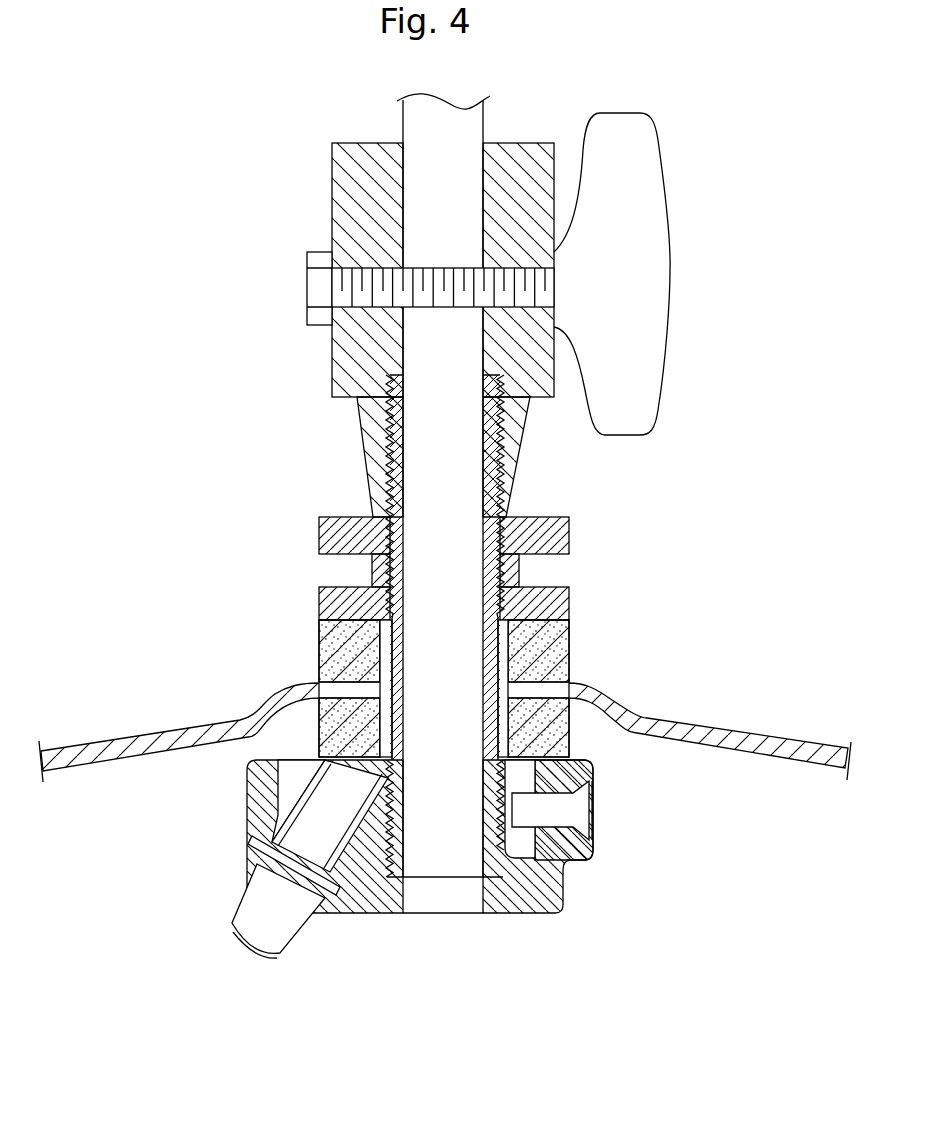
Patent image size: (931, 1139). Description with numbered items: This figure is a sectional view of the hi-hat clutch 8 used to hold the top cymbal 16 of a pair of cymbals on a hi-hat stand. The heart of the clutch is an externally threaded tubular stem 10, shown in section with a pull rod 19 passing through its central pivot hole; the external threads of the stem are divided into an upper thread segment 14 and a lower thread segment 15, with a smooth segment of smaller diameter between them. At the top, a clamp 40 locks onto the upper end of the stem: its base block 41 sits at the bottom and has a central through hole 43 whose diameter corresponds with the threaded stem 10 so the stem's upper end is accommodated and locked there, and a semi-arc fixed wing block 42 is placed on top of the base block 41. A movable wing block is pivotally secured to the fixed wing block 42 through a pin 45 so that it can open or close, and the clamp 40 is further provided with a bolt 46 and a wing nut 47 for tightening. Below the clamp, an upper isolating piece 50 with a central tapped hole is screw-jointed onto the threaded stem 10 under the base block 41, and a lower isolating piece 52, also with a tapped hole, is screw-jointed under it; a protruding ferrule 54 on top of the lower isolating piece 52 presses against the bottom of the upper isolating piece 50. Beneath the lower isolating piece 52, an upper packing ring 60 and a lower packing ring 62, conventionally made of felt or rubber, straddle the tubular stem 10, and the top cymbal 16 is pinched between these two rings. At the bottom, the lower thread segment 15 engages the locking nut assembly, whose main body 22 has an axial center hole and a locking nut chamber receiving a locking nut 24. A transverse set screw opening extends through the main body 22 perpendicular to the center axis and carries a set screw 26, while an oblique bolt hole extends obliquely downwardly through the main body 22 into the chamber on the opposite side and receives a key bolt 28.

The hi-hat clutch 8 is at (420, 562).
The externally threaded tubular stem 10 is at (390, 568).
The upper thread segment 14 is at (493, 605).
The lower thread segment 15 is at (395, 840).
The top cymbal 16 is at (742, 730).
The rod 19 is at (487, 125).
The main body 22 is at (565, 864).
The locking nut 24 is at (293, 773).
The set screw 26 is at (583, 808).
The key bolt 28 is at (243, 962).
The clamp 40 is at (486, 303).
The base block 41 is at (373, 460).
The fixed wing block 42 is at (532, 194).
The through hole 43 is at (510, 455).
The pin 45 is at (340, 195).
The bolt 46 is at (305, 295).
The wing nut 47 is at (665, 278).
The upper isolating piece 50 is at (569, 521).
The lower isolating piece 52 is at (569, 598).
The protruding ferrule 54 is at (519, 565).
The upper packing ring 60 is at (320, 637).
The lower packing ring 62 is at (567, 735).